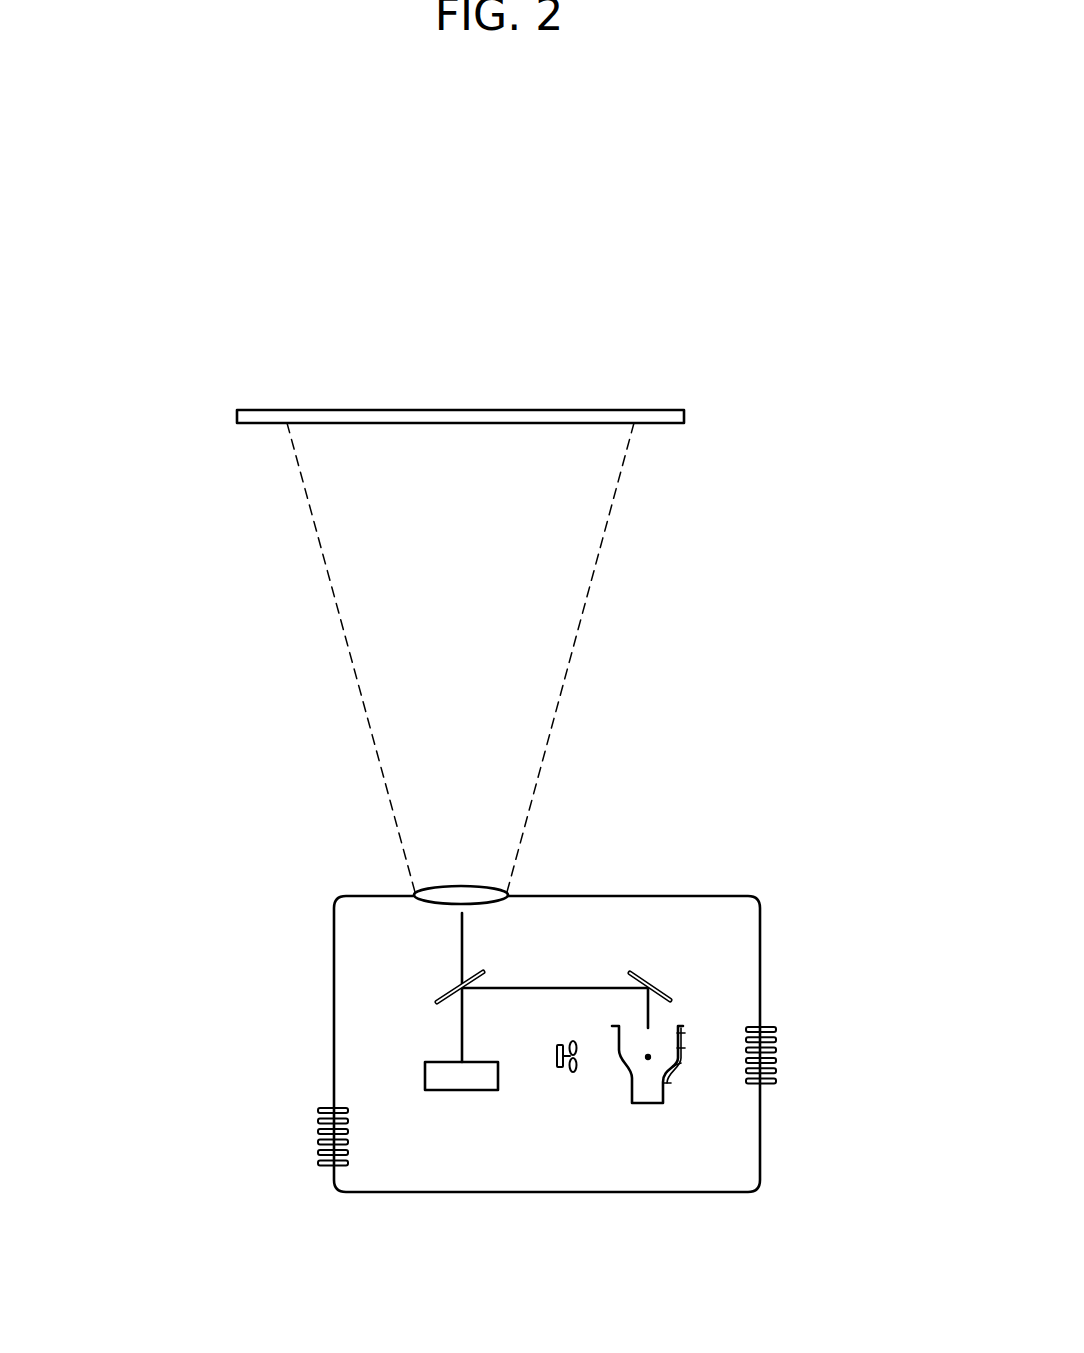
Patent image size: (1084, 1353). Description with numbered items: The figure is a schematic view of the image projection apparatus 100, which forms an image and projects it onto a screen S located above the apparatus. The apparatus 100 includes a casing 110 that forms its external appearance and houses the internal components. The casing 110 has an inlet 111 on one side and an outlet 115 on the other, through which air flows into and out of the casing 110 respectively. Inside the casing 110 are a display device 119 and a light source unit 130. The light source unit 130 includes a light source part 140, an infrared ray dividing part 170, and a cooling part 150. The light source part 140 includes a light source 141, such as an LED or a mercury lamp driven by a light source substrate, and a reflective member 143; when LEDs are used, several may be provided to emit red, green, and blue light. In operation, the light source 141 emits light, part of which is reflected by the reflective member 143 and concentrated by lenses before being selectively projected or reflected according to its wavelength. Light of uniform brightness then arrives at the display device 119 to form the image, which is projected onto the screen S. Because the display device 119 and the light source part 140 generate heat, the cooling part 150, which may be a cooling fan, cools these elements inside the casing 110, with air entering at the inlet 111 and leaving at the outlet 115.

The image projection apparatus 100 is at (159, 453).
The screen S is at (571, 420).
The casing 110 is at (760, 940).
The inlet 111 is at (320, 1139).
The outlet 115 is at (776, 1056).
The display device 119 is at (463, 1083).
The light source unit 130 is at (748, 1294).
The cooling part 150 is at (565, 1068).
The light source part 140 is at (693, 1245).
The light source 141 is at (648, 1060).
The reflective member 143 is at (620, 1062).
The infrared ray dividing part 170 is at (684, 1062).